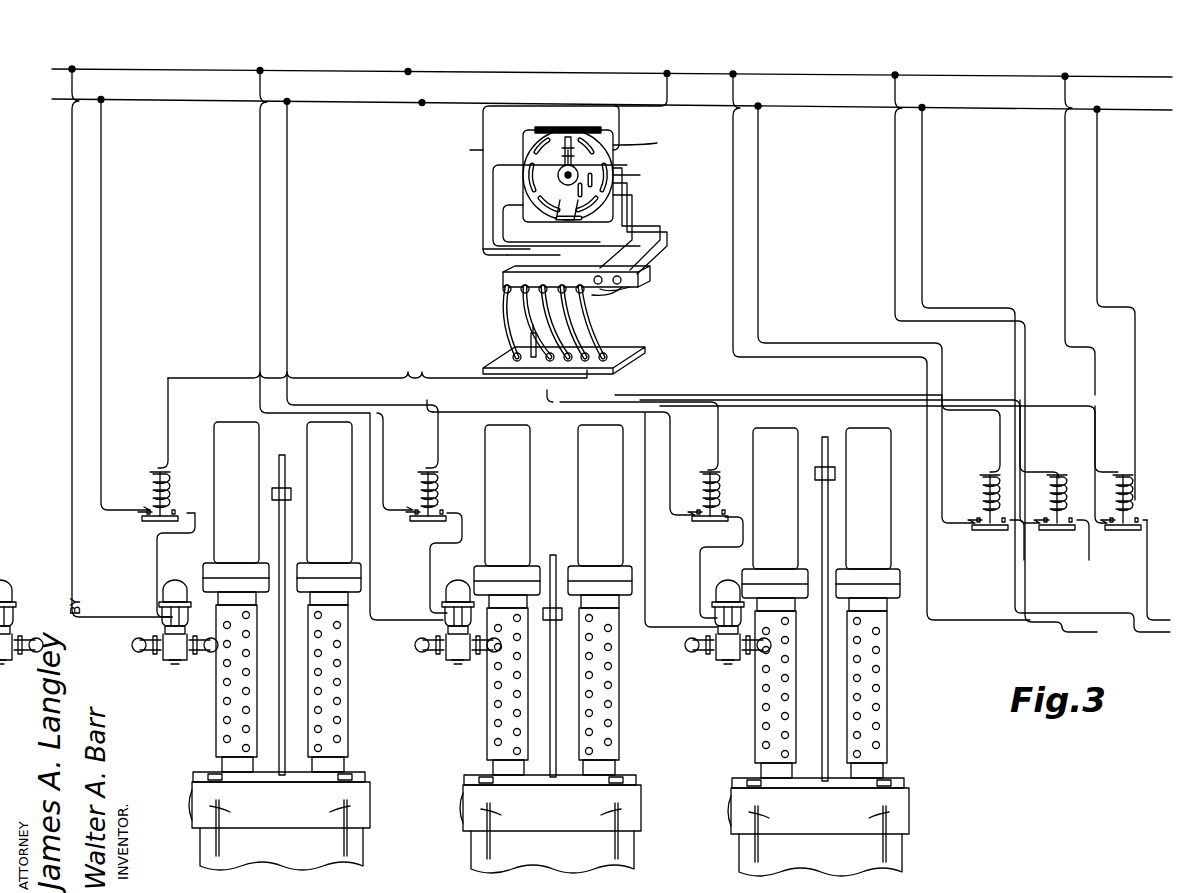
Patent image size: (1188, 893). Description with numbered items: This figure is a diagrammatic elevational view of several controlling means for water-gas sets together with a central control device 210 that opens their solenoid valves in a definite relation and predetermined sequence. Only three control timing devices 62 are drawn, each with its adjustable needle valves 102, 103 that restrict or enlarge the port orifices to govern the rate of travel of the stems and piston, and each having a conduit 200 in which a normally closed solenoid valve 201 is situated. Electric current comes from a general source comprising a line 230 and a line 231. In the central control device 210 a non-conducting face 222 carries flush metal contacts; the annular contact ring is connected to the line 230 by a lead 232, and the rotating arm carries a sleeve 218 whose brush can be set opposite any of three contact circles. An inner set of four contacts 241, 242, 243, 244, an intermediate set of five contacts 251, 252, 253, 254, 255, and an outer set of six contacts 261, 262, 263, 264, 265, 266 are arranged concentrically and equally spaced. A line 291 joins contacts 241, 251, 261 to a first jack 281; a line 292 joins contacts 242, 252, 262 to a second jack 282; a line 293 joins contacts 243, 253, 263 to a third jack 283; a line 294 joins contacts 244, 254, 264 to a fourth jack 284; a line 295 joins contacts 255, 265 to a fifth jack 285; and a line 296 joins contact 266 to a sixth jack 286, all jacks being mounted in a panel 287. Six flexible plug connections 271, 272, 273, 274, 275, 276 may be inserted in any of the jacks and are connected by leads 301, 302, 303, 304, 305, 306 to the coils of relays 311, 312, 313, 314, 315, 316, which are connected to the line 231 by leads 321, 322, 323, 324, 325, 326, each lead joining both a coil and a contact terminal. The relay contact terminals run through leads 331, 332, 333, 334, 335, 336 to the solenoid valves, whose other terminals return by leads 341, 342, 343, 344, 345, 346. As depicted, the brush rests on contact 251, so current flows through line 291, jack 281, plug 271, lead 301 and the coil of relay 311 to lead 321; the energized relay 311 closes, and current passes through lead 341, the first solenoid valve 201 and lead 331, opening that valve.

The line 230 is at (1006, 83).
The line 231 is at (994, 109).
The central control device 210 is at (591, 171).
The metal sleeve 218 is at (530, 175).
The face 222 is at (558, 128).
The lead 232 is at (656, 142).
The contact 241 is at (572, 160).
The contact 242 is at (536, 167).
The contact 243 is at (558, 218).
The contact 244 is at (650, 177).
The contact 251 is at (570, 152).
The contact 252 is at (540, 146).
The contact 253 is at (548, 218).
The contact 254 is at (595, 200).
The contact 255 is at (598, 177).
The contact 261 is at (568, 136).
The contact 262 is at (568, 145).
The contact 263 is at (538, 196).
The contact 264 is at (579, 218).
The contact 265 is at (598, 188).
The contact 266 is at (607, 155).
The flexible plug connection 271 is at (507, 295).
The flexible plug connection 272 is at (518, 345).
The flexible plug connection 273 is at (533, 302).
The flexible plug connection 274 is at (543, 305).
The flexible plug connection 275 is at (588, 337).
The flexible plug connection 276 is at (595, 299).
The jack 281 is at (505, 280).
The jack 282 is at (507, 260).
The jack 283 is at (495, 251).
The jack 284 is at (630, 290).
The jack 285 is at (640, 283).
The jack 286 is at (620, 279).
The panel 287 is at (635, 276).
The line 291 is at (482, 153).
The line 292 is at (492, 180).
The line 293 is at (503, 210).
The line 294 is at (630, 242).
The line 295 is at (635, 262).
The line 296 is at (630, 274).
The lead 301 is at (334, 378).
The lead 302 is at (445, 411).
The lead 303 is at (548, 390).
The lead 304 is at (634, 395).
The lead 305 is at (691, 398).
The lead 306 is at (744, 398).
The relay 311 is at (169, 499).
The relay 312 is at (438, 499).
The relay 313 is at (716, 499).
The relay 314 is at (973, 494).
The relay 315 is at (1034, 490).
The relay 316 is at (1106, 490).
The lead 321 is at (101, 440).
The lead 322 is at (404, 180).
The lead 323 is at (670, 462).
The lead 324 is at (943, 446).
The lead 325 is at (1039, 439).
The lead 326 is at (1111, 439).
The lead 331 is at (157, 564).
The lead 332 is at (426, 583).
The lead 333 is at (701, 573).
The lead 334 is at (1000, 577).
The lead 335 is at (1078, 577).
The lead 336 is at (1148, 565).
The lead 341 is at (72, 172).
The lead 342 is at (260, 177).
The lead 343 is at (645, 588).
The lead 344 is at (735, 200).
The lead 345 is at (893, 187).
The lead 346 is at (1063, 187).
The conduit 200 is at (158, 645).
The solenoid valve 201 is at (188, 663).
The control timing device 62 is at (222, 712).
The needle valve 102 is at (224, 739).
The needle valve 103 is at (346, 730).